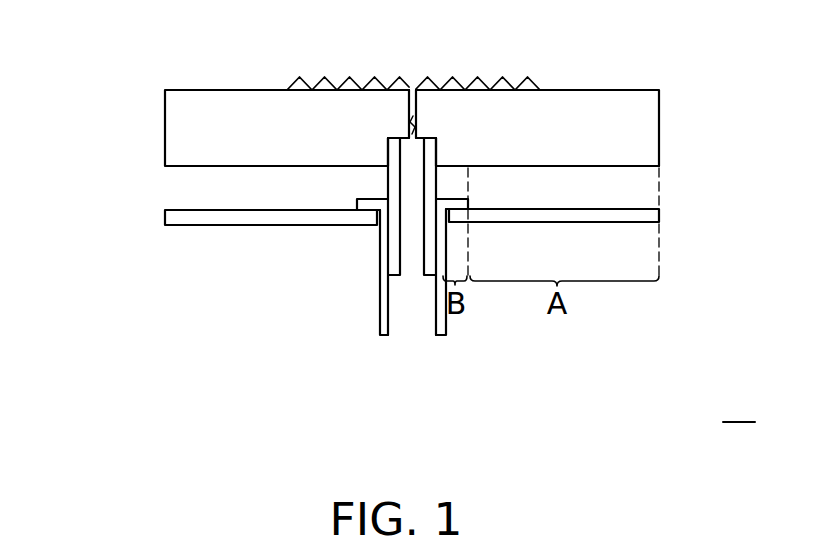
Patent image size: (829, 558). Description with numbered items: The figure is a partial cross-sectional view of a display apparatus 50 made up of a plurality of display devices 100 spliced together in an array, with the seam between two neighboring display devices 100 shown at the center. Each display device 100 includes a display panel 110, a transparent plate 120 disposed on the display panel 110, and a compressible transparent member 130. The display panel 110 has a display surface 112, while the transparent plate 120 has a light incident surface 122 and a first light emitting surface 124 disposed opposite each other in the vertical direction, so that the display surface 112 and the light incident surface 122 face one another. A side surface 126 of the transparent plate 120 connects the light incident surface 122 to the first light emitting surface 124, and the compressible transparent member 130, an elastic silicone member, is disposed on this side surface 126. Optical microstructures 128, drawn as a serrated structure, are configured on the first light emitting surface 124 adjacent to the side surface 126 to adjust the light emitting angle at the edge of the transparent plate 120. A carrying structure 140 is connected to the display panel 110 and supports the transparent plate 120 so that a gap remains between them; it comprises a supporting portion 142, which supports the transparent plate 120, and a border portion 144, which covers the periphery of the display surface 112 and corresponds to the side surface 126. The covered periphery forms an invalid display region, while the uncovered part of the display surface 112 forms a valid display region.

The display device 100 is at (417, 229).
The display panel 110 is at (461, 236).
The display surface 112 is at (573, 209).
The transparent plate 120 is at (459, 105).
The light incident surface 122 is at (633, 166).
The first light emitting surface 124 is at (613, 89).
The side surface 126 is at (416, 115).
The optical microstructures 128 is at (529, 82).
The compressible transparent member 130 is at (409, 112).
The carrying structure 140 is at (428, 296).
The supporting portion 142 is at (429, 277).
The border portion 144 is at (456, 273).
The display apparatus 50 is at (739, 406).